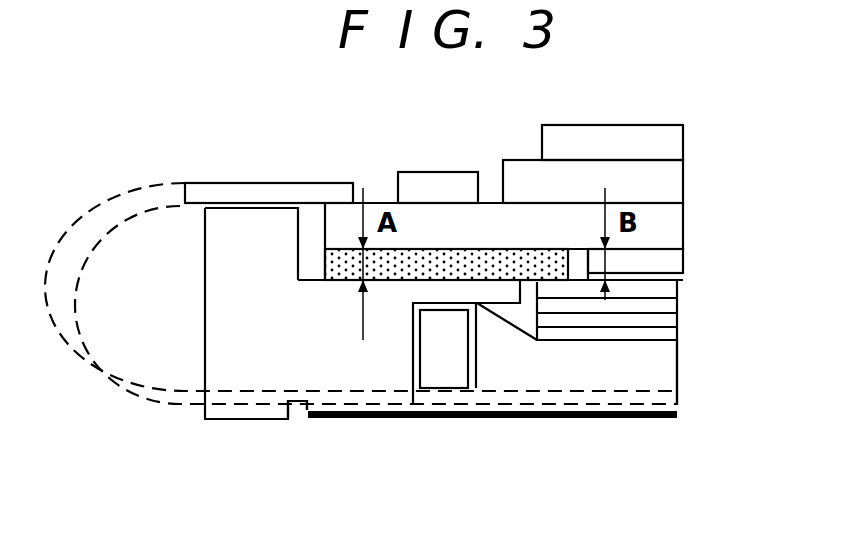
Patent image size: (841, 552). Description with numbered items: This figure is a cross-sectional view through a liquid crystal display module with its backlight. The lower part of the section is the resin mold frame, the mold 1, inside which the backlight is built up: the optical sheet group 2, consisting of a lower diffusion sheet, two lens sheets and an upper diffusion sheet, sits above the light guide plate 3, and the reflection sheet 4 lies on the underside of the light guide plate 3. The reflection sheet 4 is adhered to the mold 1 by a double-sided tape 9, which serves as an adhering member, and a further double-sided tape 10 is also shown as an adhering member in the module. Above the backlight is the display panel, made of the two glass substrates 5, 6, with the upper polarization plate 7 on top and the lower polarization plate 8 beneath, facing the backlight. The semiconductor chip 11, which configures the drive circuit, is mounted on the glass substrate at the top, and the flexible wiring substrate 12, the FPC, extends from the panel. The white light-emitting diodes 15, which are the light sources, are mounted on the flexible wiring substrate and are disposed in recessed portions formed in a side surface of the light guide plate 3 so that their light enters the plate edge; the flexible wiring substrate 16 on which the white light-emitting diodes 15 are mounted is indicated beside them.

The mold 1 is at (205, 318).
The optical sheet group 2 is at (688, 282).
The light guide plate 3 is at (647, 368).
The reflection sheet 4 is at (505, 418).
The glass substrate 5 is at (665, 180).
The glass substrate 6 is at (665, 225).
The upper polarization plate 7 is at (665, 140).
The lower polarization plate 8 is at (665, 260).
The double-sided tape 9 is at (352, 418).
The double-sided tape 10 is at (332, 268).
The semiconductor chip 11 is at (425, 178).
The flexible wiring substrate 12 is at (248, 192).
The white light-emitting diodes 15 is at (440, 377).
The flexible wiring substrate 16 is at (424, 413).